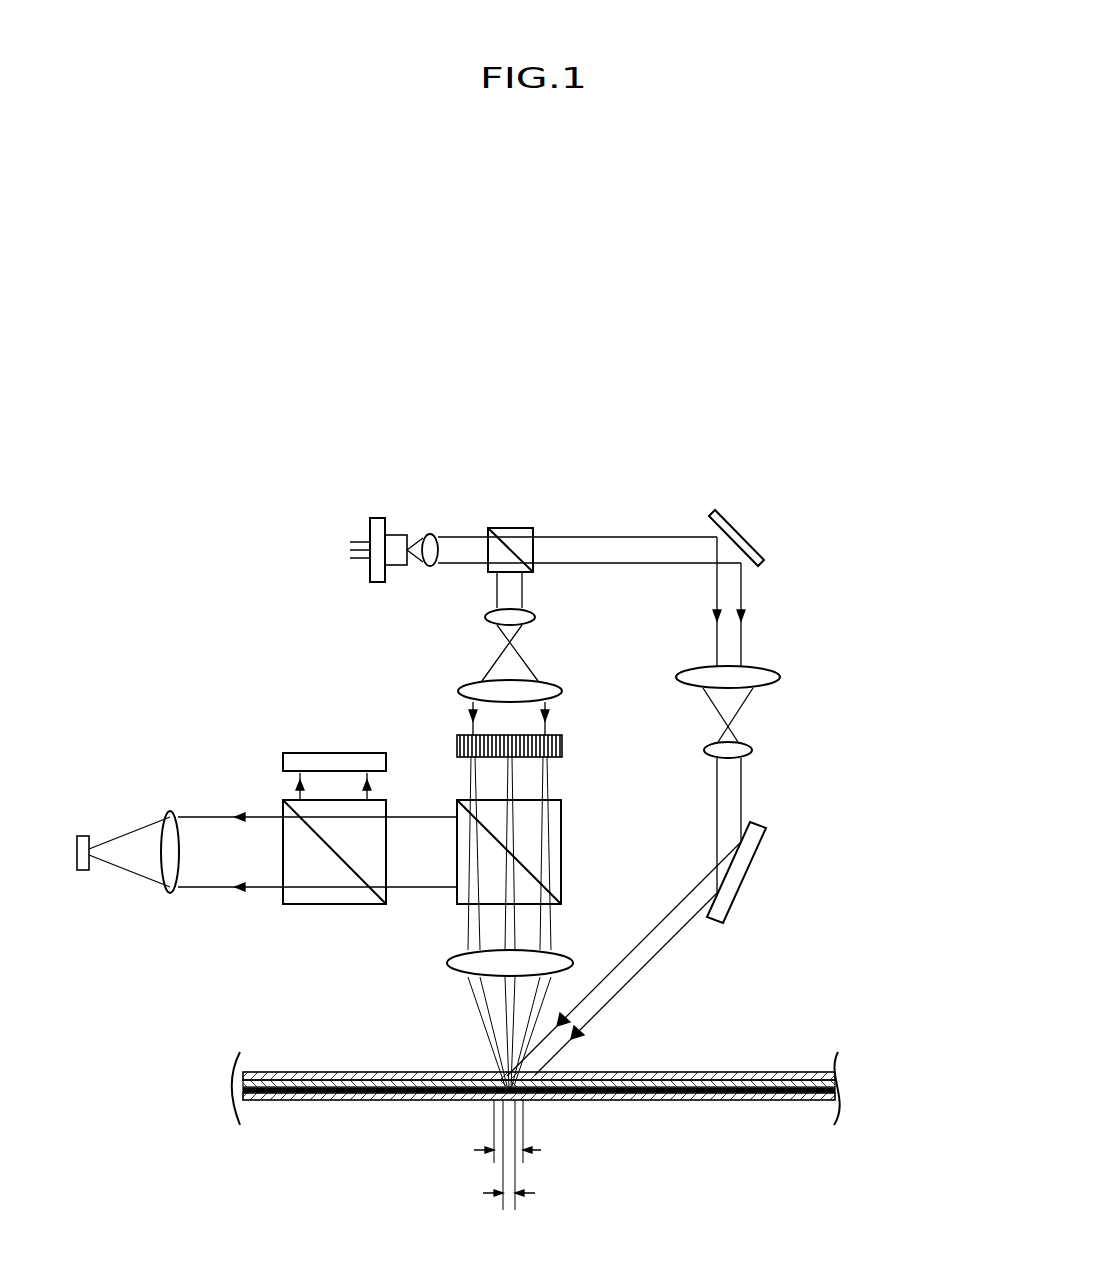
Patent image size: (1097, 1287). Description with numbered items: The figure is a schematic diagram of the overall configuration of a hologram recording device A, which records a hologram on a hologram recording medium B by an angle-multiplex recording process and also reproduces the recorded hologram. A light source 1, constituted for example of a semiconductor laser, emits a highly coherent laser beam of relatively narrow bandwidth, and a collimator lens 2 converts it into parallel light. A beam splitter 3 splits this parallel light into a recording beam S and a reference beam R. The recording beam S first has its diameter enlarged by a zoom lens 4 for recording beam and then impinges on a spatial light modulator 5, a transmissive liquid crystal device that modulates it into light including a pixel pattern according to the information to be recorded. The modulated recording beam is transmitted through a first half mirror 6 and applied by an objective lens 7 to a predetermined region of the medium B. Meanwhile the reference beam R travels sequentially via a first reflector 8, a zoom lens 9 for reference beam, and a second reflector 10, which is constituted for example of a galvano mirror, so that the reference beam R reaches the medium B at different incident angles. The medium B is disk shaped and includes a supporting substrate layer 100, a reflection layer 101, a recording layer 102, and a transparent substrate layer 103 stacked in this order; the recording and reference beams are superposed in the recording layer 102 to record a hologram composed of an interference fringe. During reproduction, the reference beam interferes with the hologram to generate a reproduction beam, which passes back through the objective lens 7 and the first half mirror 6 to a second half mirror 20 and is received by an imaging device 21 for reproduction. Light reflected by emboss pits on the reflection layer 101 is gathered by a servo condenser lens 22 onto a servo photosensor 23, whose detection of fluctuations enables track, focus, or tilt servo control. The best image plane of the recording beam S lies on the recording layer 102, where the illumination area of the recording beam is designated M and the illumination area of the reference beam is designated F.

The hologram recording device A is at (525, 368).
The light source 1 is at (373, 518).
The collimator lens 2 is at (437, 530).
The beam splitter 3 is at (517, 528).
The reference beam R is at (623, 537).
The recording beam S is at (522, 590).
The zoom lens for recording beam 4 is at (458, 690).
The spatial light modulator 5 is at (563, 737).
The first half mirror 6 is at (562, 850).
The objective lens 7 is at (445, 963).
The first reflector 8 is at (727, 530).
The zoom lens for reference beam 9 is at (752, 750).
The second reflector 10 is at (748, 877).
The second half mirror 20 is at (297, 907).
The imaging device for reproduction 21 is at (282, 760).
The servo condenser lens 22 is at (168, 893).
The servo photosensor 23 is at (87, 835).
The hologram recording medium B is at (593, 1107).
The supporting substrate layer 100 is at (840, 1100).
The reflection layer 101 is at (838, 1090).
The recording layer 102 is at (837, 1082).
The transparent substrate layer 103 is at (835, 1072).
The illumination area of the reference beam F is at (525, 1150).
The illumination area of the recording beam M is at (527, 1198).